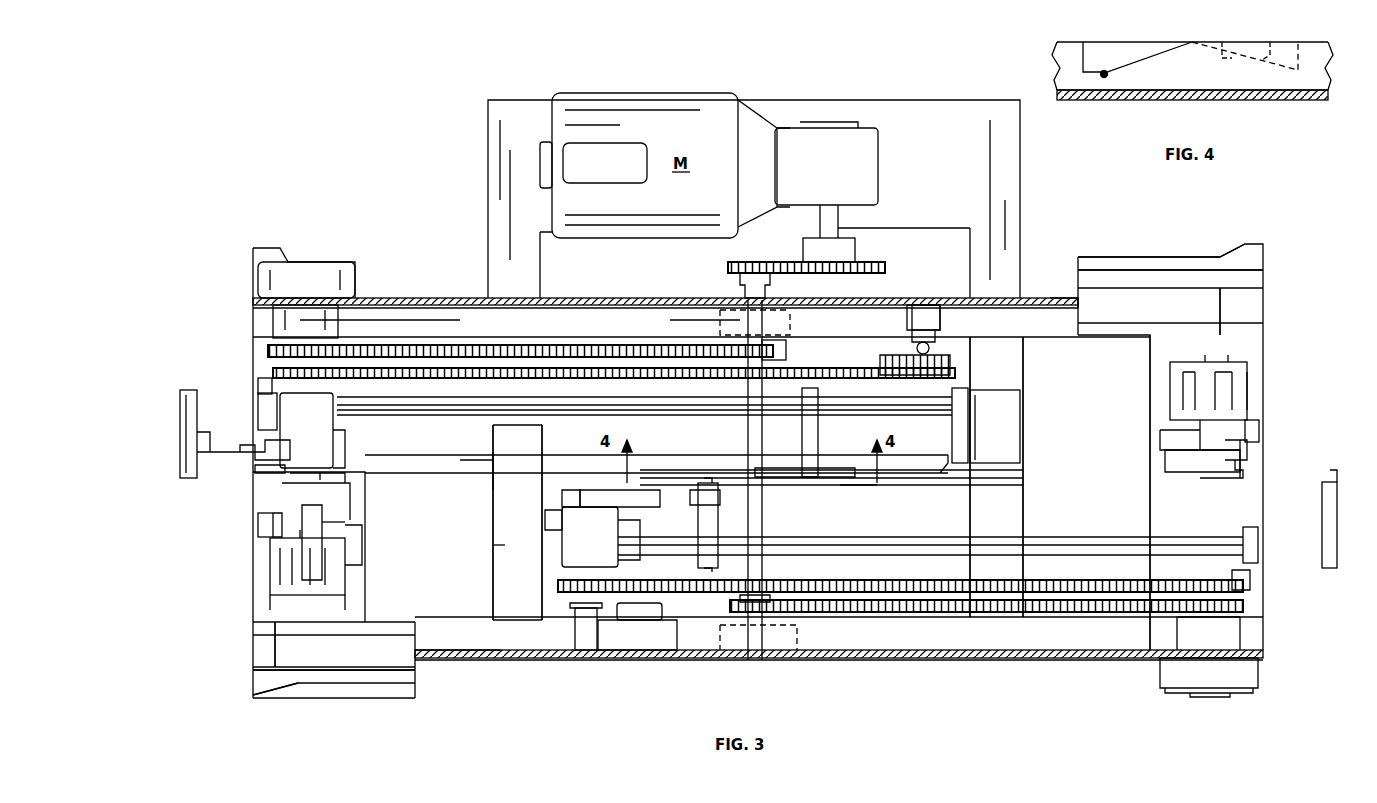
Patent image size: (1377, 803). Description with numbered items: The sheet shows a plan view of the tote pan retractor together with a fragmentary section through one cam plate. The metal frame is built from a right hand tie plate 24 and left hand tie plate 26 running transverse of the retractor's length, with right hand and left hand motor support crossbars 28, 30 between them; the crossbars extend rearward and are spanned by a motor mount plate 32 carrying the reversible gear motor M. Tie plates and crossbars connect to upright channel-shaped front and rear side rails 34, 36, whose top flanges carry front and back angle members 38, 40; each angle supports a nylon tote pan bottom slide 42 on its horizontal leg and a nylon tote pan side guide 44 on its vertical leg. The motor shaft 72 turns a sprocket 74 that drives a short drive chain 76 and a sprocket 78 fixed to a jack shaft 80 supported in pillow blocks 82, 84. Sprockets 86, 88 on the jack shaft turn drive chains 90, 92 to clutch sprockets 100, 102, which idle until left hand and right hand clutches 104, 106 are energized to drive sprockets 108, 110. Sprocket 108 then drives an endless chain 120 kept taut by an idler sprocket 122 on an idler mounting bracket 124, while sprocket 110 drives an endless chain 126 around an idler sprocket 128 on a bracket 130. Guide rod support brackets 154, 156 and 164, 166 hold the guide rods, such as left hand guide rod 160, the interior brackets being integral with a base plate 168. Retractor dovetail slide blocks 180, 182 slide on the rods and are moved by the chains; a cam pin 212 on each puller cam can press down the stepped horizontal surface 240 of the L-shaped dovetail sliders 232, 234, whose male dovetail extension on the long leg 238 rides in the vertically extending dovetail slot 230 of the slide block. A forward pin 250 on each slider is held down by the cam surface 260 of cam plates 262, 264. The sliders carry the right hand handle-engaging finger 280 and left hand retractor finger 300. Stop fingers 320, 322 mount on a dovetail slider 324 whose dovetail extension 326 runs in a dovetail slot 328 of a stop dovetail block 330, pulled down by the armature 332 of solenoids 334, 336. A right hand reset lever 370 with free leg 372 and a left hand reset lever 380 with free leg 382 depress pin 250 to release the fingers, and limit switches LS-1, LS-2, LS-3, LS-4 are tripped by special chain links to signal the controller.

In FIG. 3, the right hand tie plate 24 is at (1186, 510).
In FIG. 3, the left hand tie plate 26 is at (350, 465).
In FIG. 3, the right hand motor support crossbar 28 is at (1023, 378).
In FIG. 3, the left hand motor support crossbar 30 is at (525, 443).
In FIG. 3, the motor mount plate 32 is at (956, 140).
In FIG. 3, the front side rail 34 is at (465, 660).
In FIG. 3, the rear side rail 36 is at (1052, 298).
In FIG. 3, the front angle member 38 is at (253, 678).
In FIG. 3, the back angle member 40 is at (1263, 272).
In FIG. 3, the tote pan bottom slide 42 is at (330, 656).
In FIG. 3, the tote pan side guide 44 is at (355, 698).
In FIG. 3, the motor shaft 72 is at (838, 218).
In FIG. 3, the sprocket 74 is at (855, 252).
In FIG. 3, the short drive chain 76 is at (885, 268).
In FIG. 3, the sprocket 78 is at (740, 282).
In FIG. 3, the jack shaft 80 is at (762, 520).
In FIG. 3, the pillow block 82 is at (810, 305).
In FIG. 3, the pillow block 84 is at (808, 660).
In FIG. 3, the sprocket 86 is at (786, 348).
In FIG. 3, the sprocket 88 is at (790, 578).
In FIG. 3, the drive chain 90 is at (592, 328).
In FIG. 3, the drive chain 92 is at (1060, 620).
In FIG. 3, the clutch sprocket 100 is at (318, 335).
In FIG. 3, the clutch sprocket 102 is at (1243, 606).
In FIG. 3, the left hand clutch 104 is at (323, 290).
In FIG. 3, the right hand clutch 106 is at (1258, 680).
In FIG. 3, the sprocket 108 is at (345, 348).
In FIG. 3, the sprocket 110 is at (1243, 584).
In FIG. 3, the endless chain 120 is at (560, 378).
In FIG. 3, the idler sprocket 122 is at (940, 355).
In FIG. 3, the idler mounting bracket 124 is at (940, 326).
In FIG. 3, the endless chain 126 is at (1050, 555).
In FIG. 3, the idler sprocket 128 is at (560, 600).
In FIG. 3, the idler mounting bracket 130 is at (588, 650).
In FIG. 3, the exterior guide rod support bracket 154 is at (1250, 527).
In FIG. 3, the interior guide rod support bracket 156 is at (493, 544).
In FIG. 3, the left hand guide rod 160 is at (652, 400).
In FIG. 3, the end guide rod support bracket 164 is at (262, 393).
In FIG. 3, the interior guide rod support bracket 166 is at (952, 448).
In FIG. 3, the base plate 168 is at (1012, 415).
In FIG. 3, the retractor dovetail slide block 180 is at (608, 553).
In FIG. 3, the retractor dovetail slide block 182 is at (325, 429).
In FIG. 3, the cam pin 212 is at (493, 460).
In FIG. 3, the dovetail slot 230 is at (262, 473).
In FIG. 3, the dovetail slider 232 is at (708, 483).
In FIG. 3, the dovetail slider 234 is at (215, 420).
In FIG. 3, the long leg 238 is at (625, 490).
In FIG. 3, the stepped horizontal surface 240 is at (345, 448).
In FIG. 3, the forward pin 250 is at (690, 470).
In FIG. 4, the forward pin 250 is at (1104, 78).
In FIG. 4, the cam surface 260 is at (1222, 42).
In FIG. 4, the cam plate 262 is at (1125, 45).
In FIG. 4, the cam plate 264 is at (1270, 42).
In FIG. 3, the right hand tote pan handle-engaging finger 280 is at (1322, 580).
In FIG. 3, the left hand retractor finger 300 is at (186, 390).
In FIG. 3, the right hand stop finger 320 is at (1259, 428).
In FIG. 3, the left hand stop finger 322 is at (275, 530).
In FIG. 3, the dovetail slider 324 is at (1170, 372).
In FIG. 3, the dovetail extension 326 is at (1180, 440).
In FIG. 3, the dovetail slot 328 is at (1247, 450).
In FIG. 3, the stop dovetail block 330 is at (1165, 462).
In FIG. 3, the armature 332 is at (1240, 378).
In FIG. 3, the right hand solenoid 334 is at (1247, 388).
In FIG. 3, the left hand solenoid 336 is at (275, 590).
In FIG. 3, the right hand L-shaped reset lever 370 is at (1252, 470).
In FIG. 3, the free leg 372 is at (1210, 482).
In FIG. 3, the left hand L-shaped reset lever 380 is at (258, 525).
In FIG. 3, the free leg 382 is at (345, 478).
In FIG. 3, the limit switch LS-1 is at (258, 386).
In FIG. 3, the limit switch LS-2 is at (915, 315).
In FIG. 3, the limit switch LS-3 is at (662, 612).
In FIG. 3, the limit switch LS-4 is at (1250, 574).